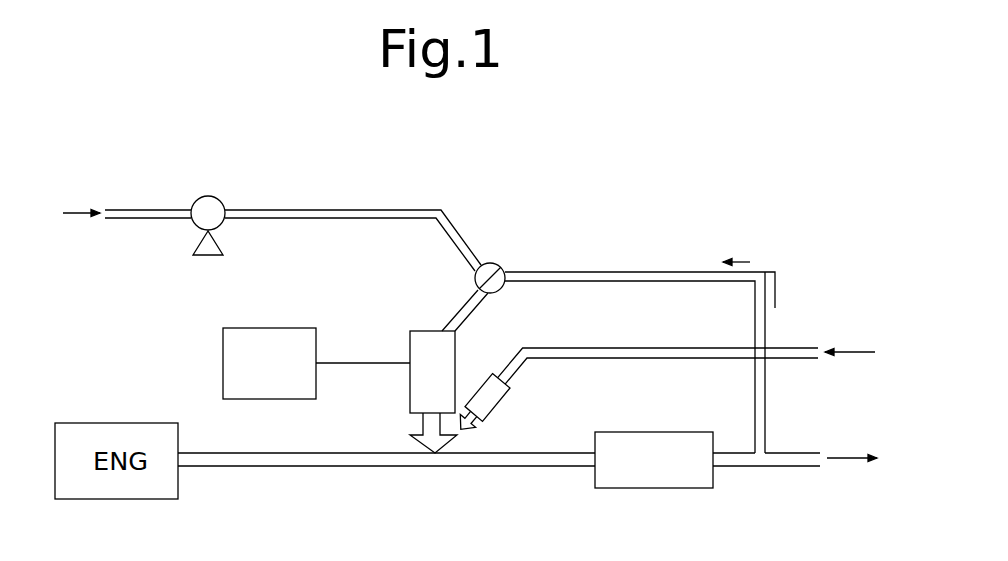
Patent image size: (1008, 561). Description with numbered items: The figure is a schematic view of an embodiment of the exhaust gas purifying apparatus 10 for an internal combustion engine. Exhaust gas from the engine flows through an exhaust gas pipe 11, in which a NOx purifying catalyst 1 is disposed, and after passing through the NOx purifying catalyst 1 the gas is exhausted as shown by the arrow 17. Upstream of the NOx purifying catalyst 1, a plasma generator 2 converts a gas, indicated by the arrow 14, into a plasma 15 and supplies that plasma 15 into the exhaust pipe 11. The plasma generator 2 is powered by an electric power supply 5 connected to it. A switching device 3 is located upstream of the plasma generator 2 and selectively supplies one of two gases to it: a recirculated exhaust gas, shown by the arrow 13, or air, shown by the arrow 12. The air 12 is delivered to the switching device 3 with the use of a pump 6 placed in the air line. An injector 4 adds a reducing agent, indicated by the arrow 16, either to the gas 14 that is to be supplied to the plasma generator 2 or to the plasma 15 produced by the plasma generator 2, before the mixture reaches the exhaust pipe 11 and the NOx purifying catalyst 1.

The NOx purifying catalyst 1 is at (595, 479).
The plasma generator 2 is at (423, 330).
The switching device 3 is at (507, 268).
The injector 4 is at (500, 405).
The electric power supply 5 is at (290, 336).
The pump 6 is at (212, 208).
The exhaust gas purifying apparatus 10 is at (500, 212).
The exhaust gas pipe 11 is at (337, 470).
The air 12 is at (73, 212).
The recirculated exhaust gas 13 is at (751, 262).
The gas 14 is at (470, 329).
The plasma 15 is at (422, 438).
The reducing agent 16 is at (851, 352).
The exhausted gas 17 is at (846, 460).